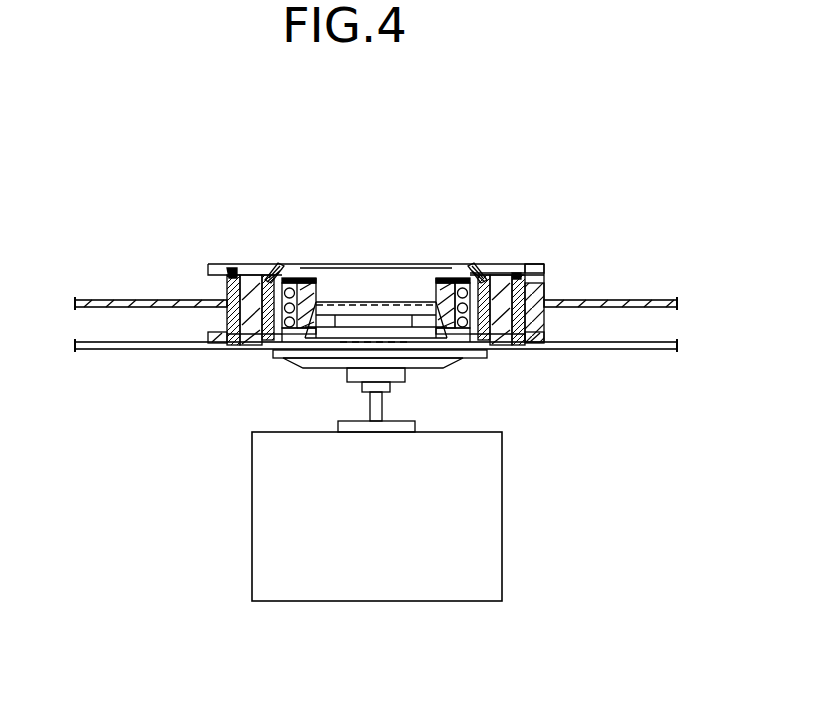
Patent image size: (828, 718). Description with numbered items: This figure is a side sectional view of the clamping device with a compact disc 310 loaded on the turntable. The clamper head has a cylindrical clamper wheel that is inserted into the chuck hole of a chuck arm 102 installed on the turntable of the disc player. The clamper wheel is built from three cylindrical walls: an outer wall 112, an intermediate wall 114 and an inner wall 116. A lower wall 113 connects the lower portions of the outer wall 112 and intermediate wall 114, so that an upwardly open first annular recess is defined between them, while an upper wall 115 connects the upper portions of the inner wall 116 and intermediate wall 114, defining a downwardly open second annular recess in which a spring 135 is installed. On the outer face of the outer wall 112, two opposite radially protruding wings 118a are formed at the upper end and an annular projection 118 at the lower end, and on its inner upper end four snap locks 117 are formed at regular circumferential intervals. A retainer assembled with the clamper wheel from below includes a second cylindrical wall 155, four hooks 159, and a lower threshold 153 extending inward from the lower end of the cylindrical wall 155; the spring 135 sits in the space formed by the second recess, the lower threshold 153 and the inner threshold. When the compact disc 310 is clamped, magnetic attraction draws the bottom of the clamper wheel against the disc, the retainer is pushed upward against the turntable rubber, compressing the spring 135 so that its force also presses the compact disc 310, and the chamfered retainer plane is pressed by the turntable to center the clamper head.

The chuck arm 102 is at (657, 302).
The compact disc 310 is at (97, 349).
The outer wall 112 is at (530, 288).
The lower wall 113 is at (507, 343).
The intermediate wall 114 is at (500, 272).
The upper wall 115 is at (468, 267).
The inner wall 116 is at (434, 267).
The snap lock 117 is at (505, 268).
The annular projection 118 is at (563, 343).
The wing 118a is at (542, 268).
The spring 135 is at (293, 268).
The lower threshold 153 is at (287, 331).
The second cylindrical wall 155 is at (236, 343).
The hook 159 is at (270, 264).